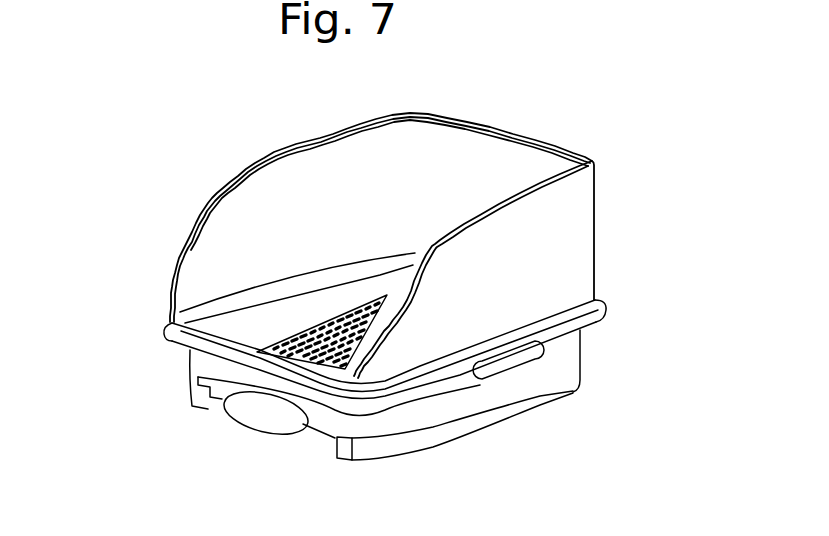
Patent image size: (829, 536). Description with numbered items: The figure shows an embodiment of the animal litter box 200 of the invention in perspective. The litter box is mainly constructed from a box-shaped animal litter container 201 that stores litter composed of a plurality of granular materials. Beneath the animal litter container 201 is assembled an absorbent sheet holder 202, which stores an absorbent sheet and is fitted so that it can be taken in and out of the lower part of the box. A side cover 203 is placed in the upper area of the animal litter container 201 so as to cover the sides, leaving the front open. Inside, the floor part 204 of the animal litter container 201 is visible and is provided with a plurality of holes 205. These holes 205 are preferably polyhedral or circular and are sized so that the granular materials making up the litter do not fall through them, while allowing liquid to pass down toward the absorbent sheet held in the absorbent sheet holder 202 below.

The hooded animal litter box 200 is at (622, 167).
The animal litter container 201 is at (572, 350).
The absorbent sheet holder 202 is at (317, 440).
The side cover 203 is at (577, 230).
The floor part 204 is at (297, 338).
The holes 205 is at (290, 347).